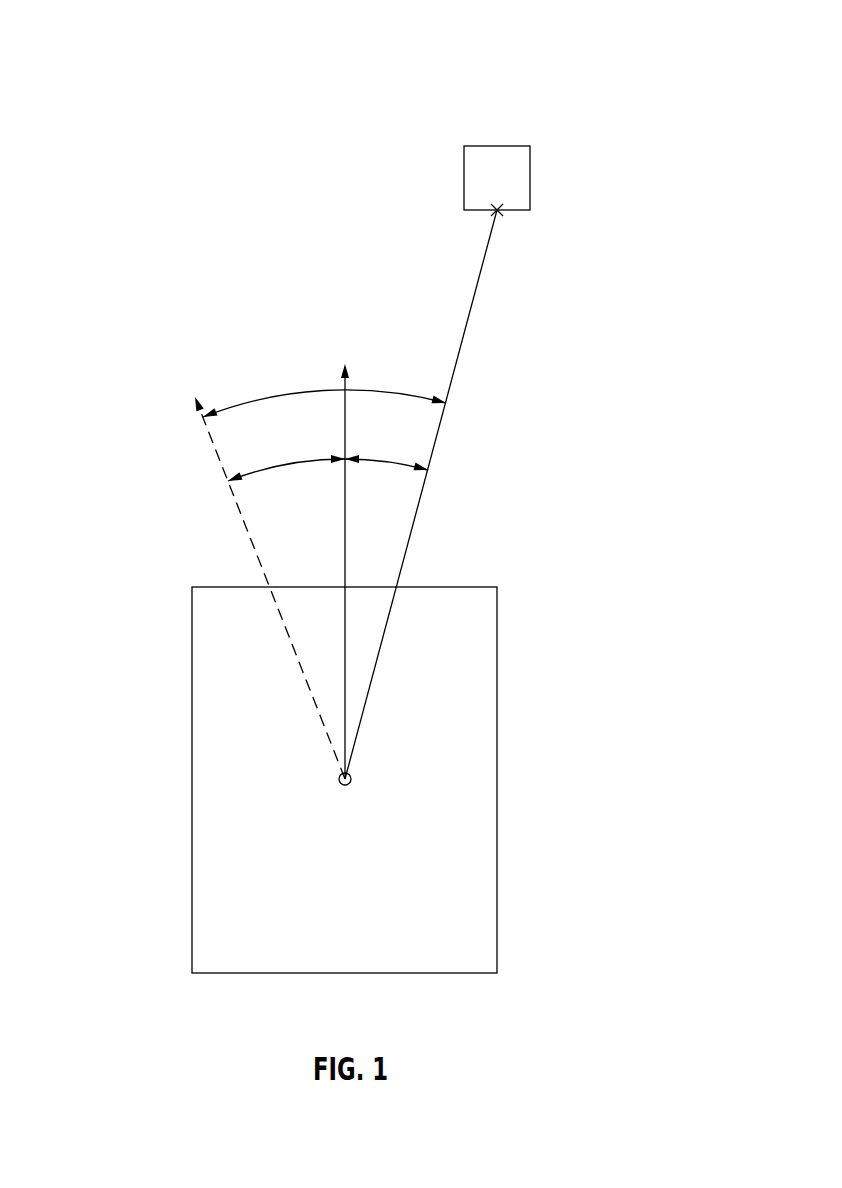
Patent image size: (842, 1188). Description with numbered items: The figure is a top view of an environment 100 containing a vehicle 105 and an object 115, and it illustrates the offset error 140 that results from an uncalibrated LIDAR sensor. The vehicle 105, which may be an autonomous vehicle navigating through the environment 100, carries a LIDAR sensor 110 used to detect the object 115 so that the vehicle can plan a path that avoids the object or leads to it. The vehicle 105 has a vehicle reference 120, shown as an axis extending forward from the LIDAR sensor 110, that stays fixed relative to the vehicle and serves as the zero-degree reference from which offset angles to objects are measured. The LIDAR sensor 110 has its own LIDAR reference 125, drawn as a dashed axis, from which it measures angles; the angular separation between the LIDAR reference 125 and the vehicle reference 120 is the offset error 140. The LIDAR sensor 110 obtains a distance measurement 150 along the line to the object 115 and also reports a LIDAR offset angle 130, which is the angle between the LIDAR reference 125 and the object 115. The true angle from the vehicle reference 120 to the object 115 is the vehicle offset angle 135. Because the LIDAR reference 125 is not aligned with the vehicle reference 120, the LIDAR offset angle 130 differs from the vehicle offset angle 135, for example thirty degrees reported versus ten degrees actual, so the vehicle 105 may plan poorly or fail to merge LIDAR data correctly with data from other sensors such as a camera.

The environment 100 is at (593, 52).
The vehicle 105 is at (497, 880).
The LIDAR sensor 110 is at (338, 784).
The object 115 is at (497, 146).
The vehicle reference 120 is at (345, 495).
The LIDAR reference 125 is at (208, 428).
The LIDAR offset angle 130 is at (268, 397).
The vehicle offset angle 135 is at (408, 462).
The offset error 140 is at (252, 478).
The distance measurement 150 is at (472, 307).